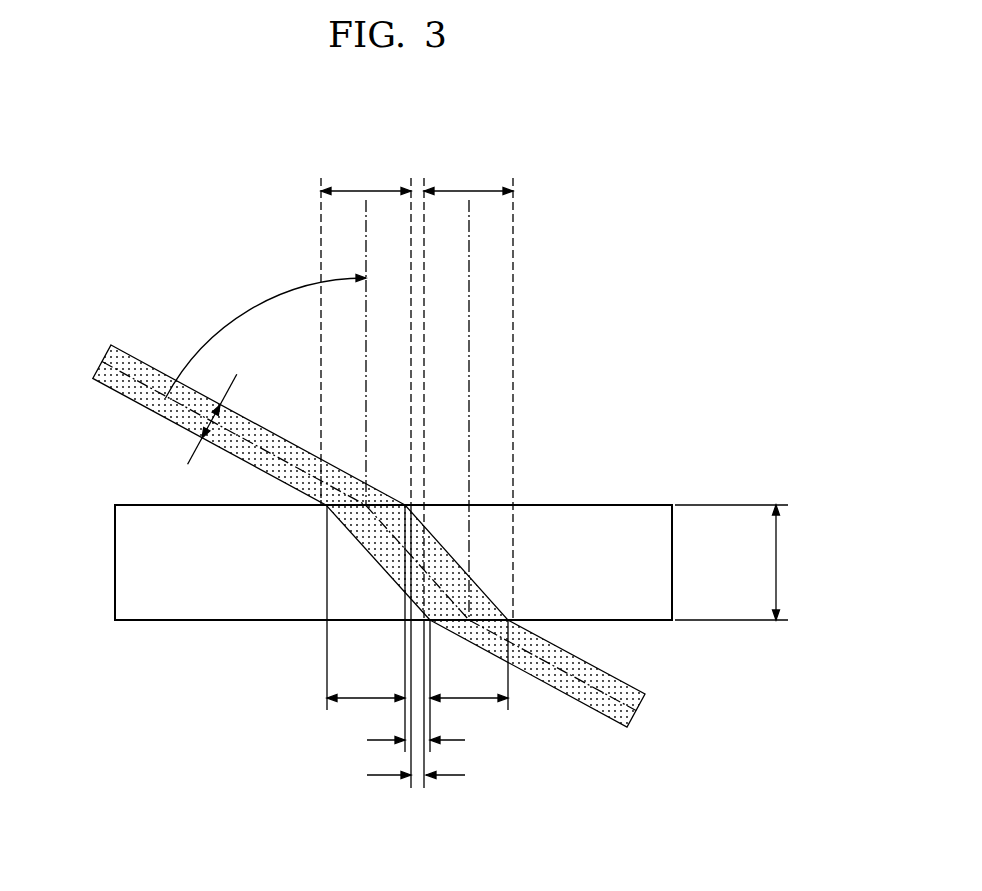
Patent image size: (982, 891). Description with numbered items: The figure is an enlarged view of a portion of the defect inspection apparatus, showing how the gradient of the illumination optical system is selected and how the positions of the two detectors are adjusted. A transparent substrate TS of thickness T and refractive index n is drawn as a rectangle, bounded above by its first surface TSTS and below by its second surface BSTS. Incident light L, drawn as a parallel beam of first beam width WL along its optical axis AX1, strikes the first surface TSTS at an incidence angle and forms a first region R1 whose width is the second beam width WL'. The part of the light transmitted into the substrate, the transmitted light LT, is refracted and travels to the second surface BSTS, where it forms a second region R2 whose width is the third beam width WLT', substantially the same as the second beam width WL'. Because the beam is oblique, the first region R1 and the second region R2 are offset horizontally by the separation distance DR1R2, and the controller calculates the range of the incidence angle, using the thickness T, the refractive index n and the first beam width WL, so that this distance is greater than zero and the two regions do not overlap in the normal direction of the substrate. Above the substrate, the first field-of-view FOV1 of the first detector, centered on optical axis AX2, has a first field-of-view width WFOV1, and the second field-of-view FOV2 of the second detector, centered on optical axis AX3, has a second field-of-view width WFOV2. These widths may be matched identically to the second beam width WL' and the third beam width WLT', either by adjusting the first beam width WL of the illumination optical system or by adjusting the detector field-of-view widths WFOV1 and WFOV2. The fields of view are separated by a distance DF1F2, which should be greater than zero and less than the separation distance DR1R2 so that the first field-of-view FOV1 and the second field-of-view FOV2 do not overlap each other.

The incident light L is at (252, 465).
The transmitted light LT is at (386, 573).
The optical axis of the incident light AX1 is at (141, 383).
The optical axis of the first field-of-view AX2 is at (366, 265).
The optical axis of the second field-of-view AX3 is at (469, 265).
The transparent substrate TS is at (672, 563).
The refractive index of the transparent substrate n is at (130, 562).
The first surface of the transparent substrate TSTS is at (642, 505).
The second surface of the transparent substrate BSTS is at (642, 620).
The thickness of the transparent substrate T is at (736, 562).
The first field-of-view FOV1 is at (312, 246).
The second field-of-view FOV2 is at (526, 243).
The first field-of-view width WFOV1 is at (366, 179).
The second field-of-view width WFOV2 is at (468, 179).
The first beam width WL is at (212, 415).
The first region R1 is at (350, 523).
The second region R2 is at (469, 630).
The second beam width WL' is at (366, 617).
The third beam width WLT' is at (469, 674).
The separation distance between the first region and the second region DR1R2 is at (384, 741).
The separation distance between the first field-of-view and the second field-of-view DF1F2 is at (384, 646).